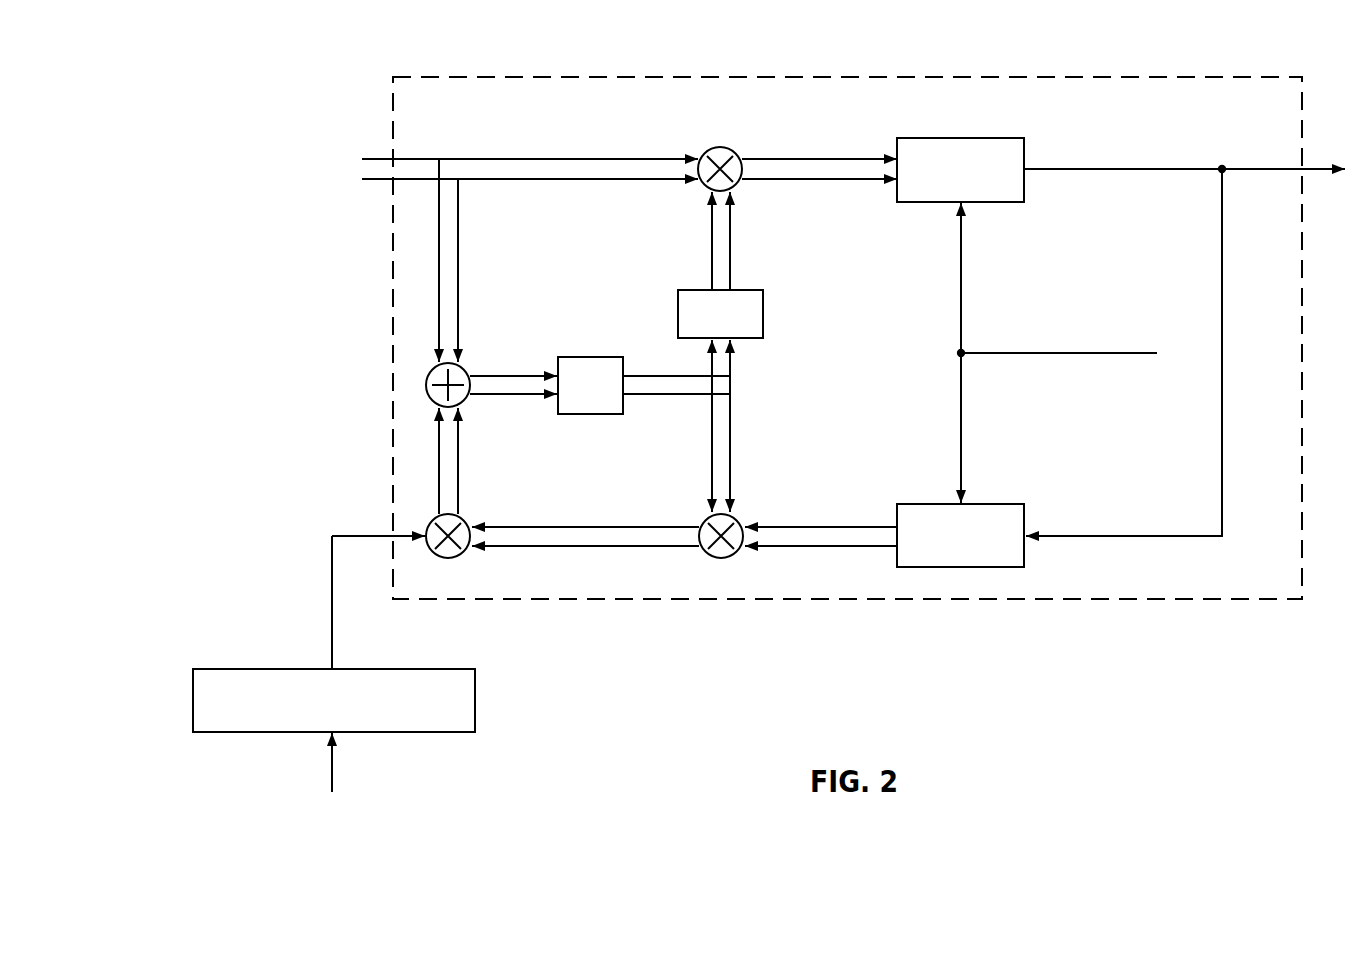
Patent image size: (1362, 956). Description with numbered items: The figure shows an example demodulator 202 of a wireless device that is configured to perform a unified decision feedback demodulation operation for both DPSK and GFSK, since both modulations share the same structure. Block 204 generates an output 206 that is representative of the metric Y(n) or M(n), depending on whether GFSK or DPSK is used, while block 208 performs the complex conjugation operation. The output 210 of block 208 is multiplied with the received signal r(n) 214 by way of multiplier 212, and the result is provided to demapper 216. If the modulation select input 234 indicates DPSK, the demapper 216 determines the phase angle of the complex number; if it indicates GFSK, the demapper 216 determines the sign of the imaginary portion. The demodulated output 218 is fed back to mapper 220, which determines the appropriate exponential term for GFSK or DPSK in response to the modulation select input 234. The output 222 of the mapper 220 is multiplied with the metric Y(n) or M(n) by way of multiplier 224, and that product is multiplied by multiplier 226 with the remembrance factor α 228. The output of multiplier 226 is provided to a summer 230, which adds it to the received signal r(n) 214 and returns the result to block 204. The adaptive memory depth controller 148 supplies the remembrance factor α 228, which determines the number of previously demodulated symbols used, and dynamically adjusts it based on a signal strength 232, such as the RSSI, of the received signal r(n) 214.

The demodulator 202 is at (828, 77).
The received signal r(n) 214 is at (449, 131).
The multiplier 212 is at (722, 150).
The demapper 216 is at (959, 137).
The demodulated output 218 is at (1163, 136).
The output of block 208 210 is at (733, 226).
The block 208 is at (742, 290).
The output 206 is at (733, 385).
The block 204 is at (590, 357).
The adder 230 is at (465, 367).
The multiplier 226 is at (448, 558).
The multiplier 224 is at (720, 558).
The output of the mapper 222 is at (795, 527).
The mapper 220 is at (992, 504).
The modulation select input 234 is at (1071, 325).
The remembrance factor α 228 is at (316, 522).
The adaptive memory depth controller 148 is at (408, 669).
The signal strength 232 is at (373, 791).